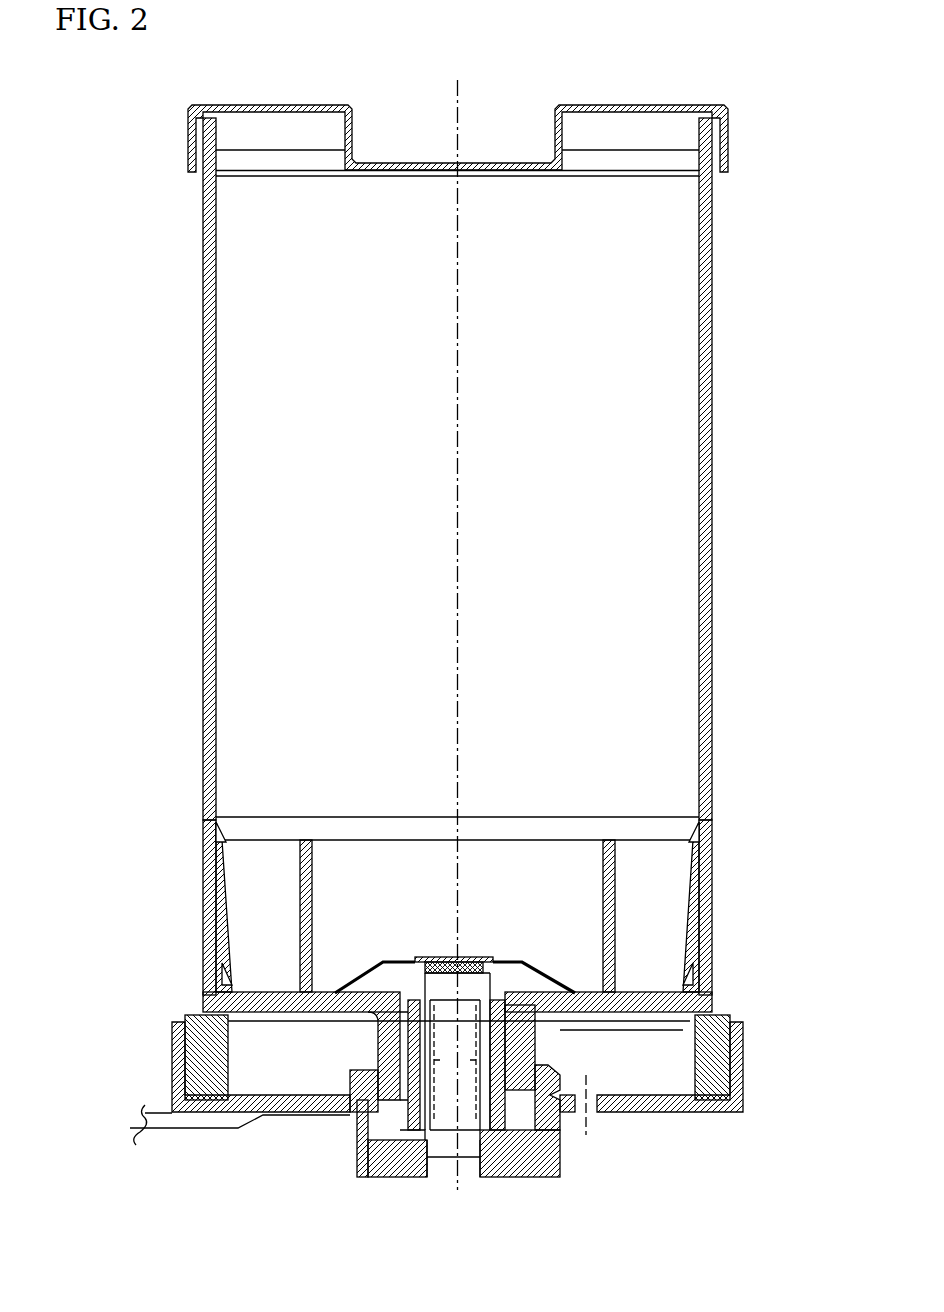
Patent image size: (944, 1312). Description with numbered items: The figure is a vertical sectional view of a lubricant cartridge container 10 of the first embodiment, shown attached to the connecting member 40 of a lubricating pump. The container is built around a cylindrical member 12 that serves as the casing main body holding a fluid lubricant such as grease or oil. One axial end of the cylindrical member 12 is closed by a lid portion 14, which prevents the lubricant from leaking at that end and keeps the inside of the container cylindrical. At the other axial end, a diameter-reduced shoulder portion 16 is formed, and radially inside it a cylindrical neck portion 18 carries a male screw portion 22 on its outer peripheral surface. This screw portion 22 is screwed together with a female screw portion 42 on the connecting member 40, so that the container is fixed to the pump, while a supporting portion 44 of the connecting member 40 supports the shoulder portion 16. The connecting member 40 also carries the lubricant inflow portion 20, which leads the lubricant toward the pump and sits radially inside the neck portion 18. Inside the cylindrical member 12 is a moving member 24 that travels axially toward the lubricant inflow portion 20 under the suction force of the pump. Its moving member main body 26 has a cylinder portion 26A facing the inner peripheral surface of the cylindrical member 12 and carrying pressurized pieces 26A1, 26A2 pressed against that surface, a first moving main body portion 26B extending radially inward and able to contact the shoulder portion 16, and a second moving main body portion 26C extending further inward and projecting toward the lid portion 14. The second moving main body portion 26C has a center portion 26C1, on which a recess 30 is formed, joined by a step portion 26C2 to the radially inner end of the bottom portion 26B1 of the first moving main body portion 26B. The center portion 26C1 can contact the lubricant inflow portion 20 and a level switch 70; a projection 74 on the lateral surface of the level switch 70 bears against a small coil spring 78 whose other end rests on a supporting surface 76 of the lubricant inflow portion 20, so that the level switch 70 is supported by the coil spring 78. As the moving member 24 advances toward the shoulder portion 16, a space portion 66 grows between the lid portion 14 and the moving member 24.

The lubricant cartridge container 10 is at (776, 215).
The cylindrical member 12 is at (716, 446).
The lid portion 14 is at (644, 105).
The shoulder portion 16 is at (608, 1012).
The neck portion 18 is at (378, 1043).
The lubricant inflow portion 20 is at (397, 1130).
The screw portion 22 is at (360, 1103).
The moving member 24 is at (546, 812).
The moving member main body 26 is at (706, 897).
The cylinder portion 26A is at (203, 893).
The pressurized piece 26A1 is at (212, 822).
The pressurized piece 26A2 is at (203, 965).
The first moving main body portion 26B is at (205, 1000).
The bottom portion 26B1 is at (268, 1002).
The second moving main body portion 26C is at (384, 960).
The center portion 26C1 is at (400, 960).
The step portion 26C2 is at (360, 978).
The recess 30 is at (445, 958).
The connecting member 40 is at (747, 1057).
The screw portion 42 is at (540, 1090).
The supporting portion 44 is at (683, 1062).
The space portion 66 is at (238, 470).
The level switch 70 is at (492, 983).
The projection 74 is at (500, 1017).
The supporting surface 76 is at (480, 1117).
The coil spring 78 is at (513, 1007).